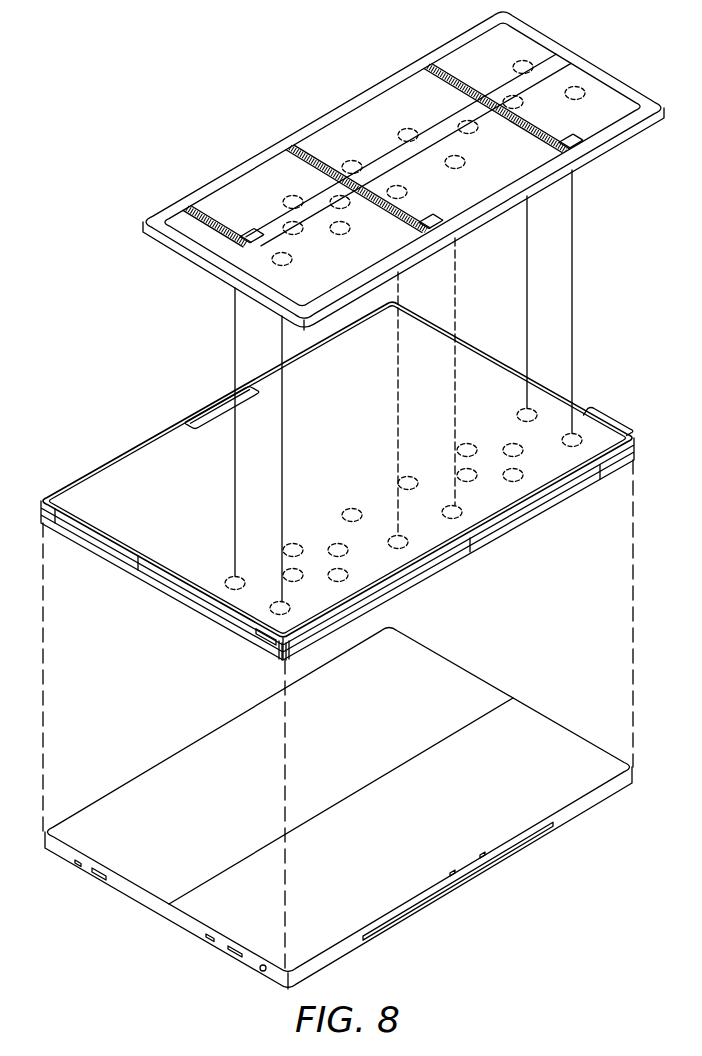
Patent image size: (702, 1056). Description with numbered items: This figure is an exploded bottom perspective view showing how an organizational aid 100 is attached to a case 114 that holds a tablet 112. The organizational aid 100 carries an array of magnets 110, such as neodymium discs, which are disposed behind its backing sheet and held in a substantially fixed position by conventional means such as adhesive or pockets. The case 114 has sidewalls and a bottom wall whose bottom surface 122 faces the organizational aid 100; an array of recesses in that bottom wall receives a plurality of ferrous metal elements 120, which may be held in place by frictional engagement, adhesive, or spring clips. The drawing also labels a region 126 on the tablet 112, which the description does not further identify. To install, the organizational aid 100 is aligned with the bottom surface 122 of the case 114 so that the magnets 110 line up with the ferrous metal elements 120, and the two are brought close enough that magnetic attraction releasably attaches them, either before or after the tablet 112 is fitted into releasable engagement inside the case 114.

The organizational aid 100 is at (319, 108).
The magnets 110 is at (580, 82).
The tablet 112 is at (338, 808).
The case 114 is at (326, 481).
The ferrous metal elements 120 is at (352, 507).
The bottom surface 122 is at (98, 488).
The display/keyboard region of base 126 is at (175, 776).